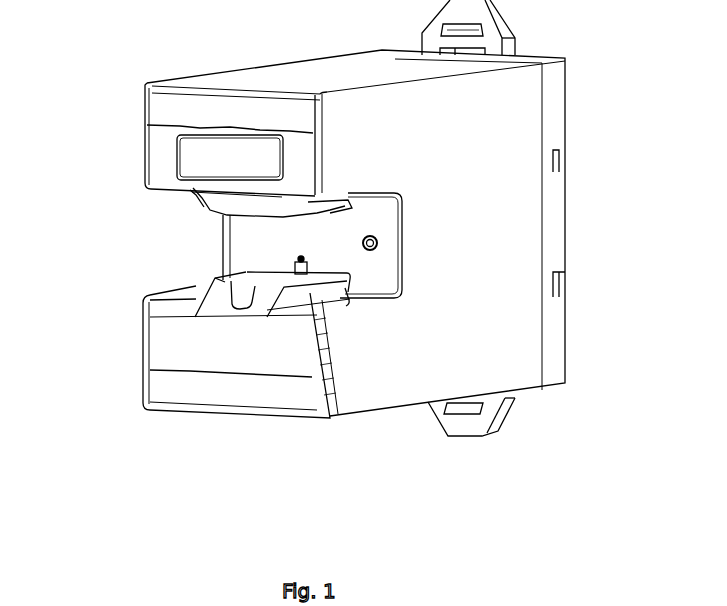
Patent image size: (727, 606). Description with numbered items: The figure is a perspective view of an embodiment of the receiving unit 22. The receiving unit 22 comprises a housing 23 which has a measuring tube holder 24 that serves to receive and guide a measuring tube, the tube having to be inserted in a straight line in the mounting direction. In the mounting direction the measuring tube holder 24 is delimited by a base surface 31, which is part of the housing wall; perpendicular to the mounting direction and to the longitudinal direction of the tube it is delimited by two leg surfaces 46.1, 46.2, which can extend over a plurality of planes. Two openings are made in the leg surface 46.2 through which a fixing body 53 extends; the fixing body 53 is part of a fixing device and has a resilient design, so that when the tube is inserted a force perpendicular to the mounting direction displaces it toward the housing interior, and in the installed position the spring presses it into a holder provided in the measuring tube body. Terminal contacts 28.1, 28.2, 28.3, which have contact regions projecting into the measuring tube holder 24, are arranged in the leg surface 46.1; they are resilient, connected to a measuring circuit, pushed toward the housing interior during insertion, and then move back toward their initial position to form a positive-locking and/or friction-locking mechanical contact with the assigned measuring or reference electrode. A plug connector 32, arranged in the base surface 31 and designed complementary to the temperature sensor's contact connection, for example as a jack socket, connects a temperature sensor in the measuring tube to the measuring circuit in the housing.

The receiving unit 22 is at (170, 100).
The housing 23 is at (473, 368).
The measuring tube holder 24 is at (172, 281).
The base surface 31 is at (383, 215).
The plug connector 32 is at (378, 246).
The leg surface 46.1 is at (270, 276).
The leg surface 46.2 is at (185, 190).
The fixing body 53 is at (328, 205).
The terminal contact 28.1 is at (301, 264).
The terminal contact 28.2 is at (242, 278).
The terminal contact 28.3 is at (349, 297).